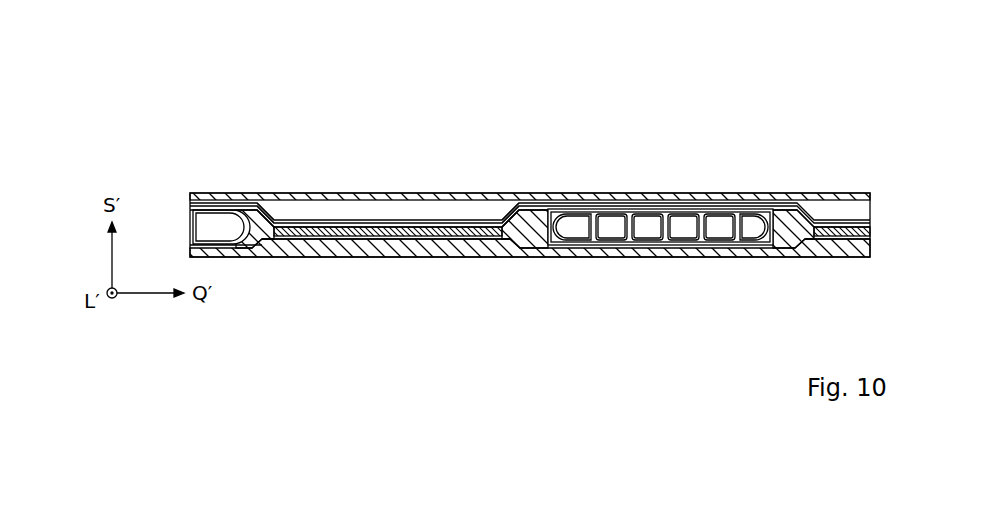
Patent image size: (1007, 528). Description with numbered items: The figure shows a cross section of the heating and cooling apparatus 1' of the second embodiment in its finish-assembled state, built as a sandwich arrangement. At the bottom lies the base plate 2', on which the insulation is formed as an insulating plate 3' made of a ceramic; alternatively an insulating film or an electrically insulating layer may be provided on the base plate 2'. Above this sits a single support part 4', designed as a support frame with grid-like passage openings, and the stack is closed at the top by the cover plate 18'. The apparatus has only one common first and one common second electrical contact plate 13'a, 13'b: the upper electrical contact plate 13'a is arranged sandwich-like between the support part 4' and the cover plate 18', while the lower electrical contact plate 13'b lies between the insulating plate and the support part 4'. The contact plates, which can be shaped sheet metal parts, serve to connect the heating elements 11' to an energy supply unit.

The heating and cooling apparatus 1' is at (536, 149).
The base plate 2' is at (530, 281).
The insulating plate 3' is at (572, 270).
The support part 4' is at (523, 202).
The heating elements 11' is at (536, 190).
The upper electrical contact plate 13'a is at (294, 189).
The lower electrical contact plate 13'b is at (274, 260).
The cover plate 18' is at (660, 185).